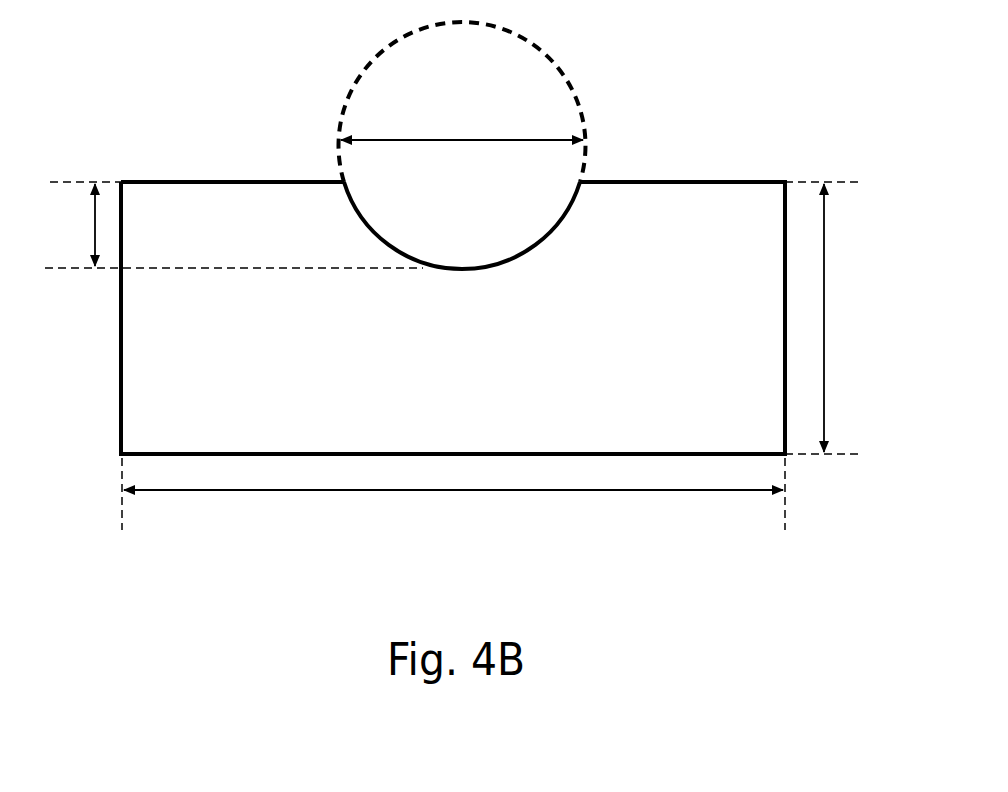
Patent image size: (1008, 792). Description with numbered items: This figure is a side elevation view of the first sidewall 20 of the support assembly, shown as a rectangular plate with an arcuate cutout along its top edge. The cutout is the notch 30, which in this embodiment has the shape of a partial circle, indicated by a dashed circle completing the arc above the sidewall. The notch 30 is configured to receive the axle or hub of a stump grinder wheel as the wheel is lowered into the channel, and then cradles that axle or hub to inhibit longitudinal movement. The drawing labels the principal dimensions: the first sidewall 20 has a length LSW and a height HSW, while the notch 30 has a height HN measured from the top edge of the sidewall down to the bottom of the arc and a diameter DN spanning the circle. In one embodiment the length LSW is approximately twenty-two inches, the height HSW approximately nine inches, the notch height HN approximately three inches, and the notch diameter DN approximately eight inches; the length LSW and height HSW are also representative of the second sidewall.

The first sidewall 20 is at (196, 179).
The notch 30 is at (503, 262).
The height of notch HN is at (93, 222).
The diameter of notch DN is at (450, 138).
The height of sidewall HSW is at (826, 321).
The length of sidewall LSW is at (364, 491).